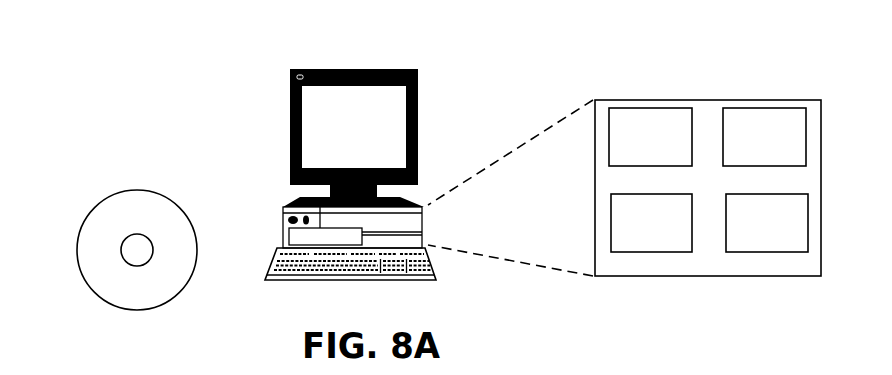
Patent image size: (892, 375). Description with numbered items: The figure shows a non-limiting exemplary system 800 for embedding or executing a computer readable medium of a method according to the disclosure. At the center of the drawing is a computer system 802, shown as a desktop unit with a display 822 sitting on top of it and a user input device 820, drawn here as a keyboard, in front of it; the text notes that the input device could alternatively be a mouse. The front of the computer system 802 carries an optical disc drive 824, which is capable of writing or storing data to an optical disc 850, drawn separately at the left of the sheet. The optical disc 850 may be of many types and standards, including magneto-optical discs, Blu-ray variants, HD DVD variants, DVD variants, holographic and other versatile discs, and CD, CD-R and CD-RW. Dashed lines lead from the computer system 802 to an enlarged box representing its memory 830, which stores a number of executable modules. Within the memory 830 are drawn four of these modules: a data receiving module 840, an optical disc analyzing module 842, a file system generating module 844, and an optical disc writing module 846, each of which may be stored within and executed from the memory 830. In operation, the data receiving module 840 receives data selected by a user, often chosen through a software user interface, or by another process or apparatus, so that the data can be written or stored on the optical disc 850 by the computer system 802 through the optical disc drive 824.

The system 800 is at (171, 58).
The computer system 802 is at (436, 238).
The user input device 820 is at (288, 281).
The display 822 is at (345, 69).
The optical disc drive 824 is at (316, 226).
The memory 830 is at (743, 101).
The data receiving module 840 is at (650, 137).
The optical disc analyzing module 842 is at (764, 137).
The file system generating module 844 is at (651, 223).
The optical disc writing module 846 is at (767, 223).
The optical disc 850 is at (104, 197).